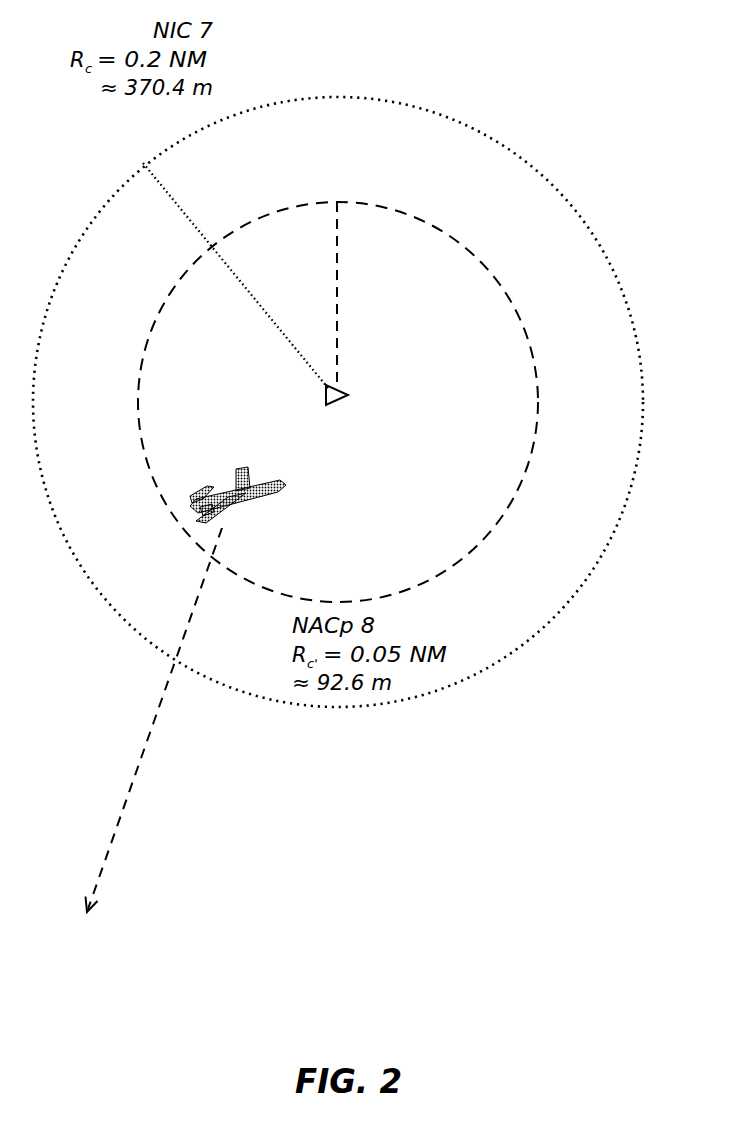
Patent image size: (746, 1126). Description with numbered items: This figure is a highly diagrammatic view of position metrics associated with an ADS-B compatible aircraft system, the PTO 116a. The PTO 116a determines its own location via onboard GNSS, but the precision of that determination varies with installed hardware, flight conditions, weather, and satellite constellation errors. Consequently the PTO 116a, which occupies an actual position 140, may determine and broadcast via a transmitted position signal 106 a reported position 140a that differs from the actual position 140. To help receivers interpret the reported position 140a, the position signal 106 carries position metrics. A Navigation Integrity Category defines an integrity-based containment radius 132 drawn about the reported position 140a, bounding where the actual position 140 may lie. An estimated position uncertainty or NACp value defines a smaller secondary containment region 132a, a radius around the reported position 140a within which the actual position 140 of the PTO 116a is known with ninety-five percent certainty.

The transmitted position signal 106 is at (124, 800).
The PTO 116a is at (239, 481).
The containment radius 132 is at (178, 207).
The secondary containment region 132a is at (338, 265).
The actual position 140 is at (240, 507).
The reported position 140a is at (337, 406).